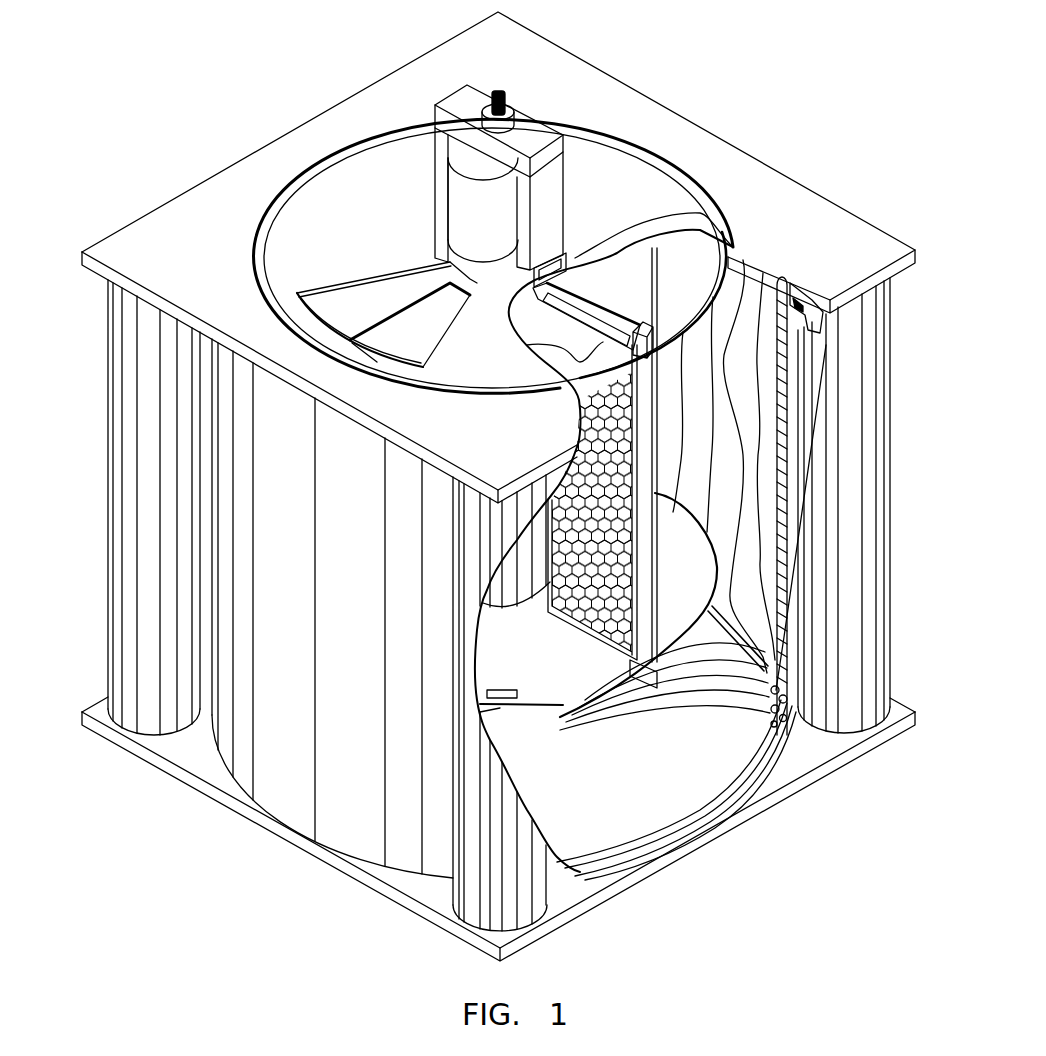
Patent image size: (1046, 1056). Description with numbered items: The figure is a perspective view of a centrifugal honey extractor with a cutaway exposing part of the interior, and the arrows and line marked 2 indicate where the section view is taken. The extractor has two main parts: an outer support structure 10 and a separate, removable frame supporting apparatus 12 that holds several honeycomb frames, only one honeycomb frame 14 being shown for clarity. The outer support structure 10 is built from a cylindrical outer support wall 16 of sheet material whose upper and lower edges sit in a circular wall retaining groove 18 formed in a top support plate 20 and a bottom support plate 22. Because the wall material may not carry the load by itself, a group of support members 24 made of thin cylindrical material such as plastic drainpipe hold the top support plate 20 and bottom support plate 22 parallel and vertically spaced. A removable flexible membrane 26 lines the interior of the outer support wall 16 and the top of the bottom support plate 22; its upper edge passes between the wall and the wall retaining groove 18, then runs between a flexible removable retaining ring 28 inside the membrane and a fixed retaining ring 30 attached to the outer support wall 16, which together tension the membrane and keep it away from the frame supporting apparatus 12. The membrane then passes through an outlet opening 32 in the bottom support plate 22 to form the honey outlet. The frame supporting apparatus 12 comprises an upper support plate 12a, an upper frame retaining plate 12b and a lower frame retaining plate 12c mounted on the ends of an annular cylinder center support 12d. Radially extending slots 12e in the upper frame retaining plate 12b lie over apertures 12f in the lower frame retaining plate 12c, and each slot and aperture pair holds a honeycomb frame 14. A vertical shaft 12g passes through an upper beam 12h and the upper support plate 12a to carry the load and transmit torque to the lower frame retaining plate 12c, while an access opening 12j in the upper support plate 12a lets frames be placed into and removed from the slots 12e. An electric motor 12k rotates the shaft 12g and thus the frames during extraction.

The section line 2- 2 is at (783, 88).
The outer support structure 10 is at (207, 190).
The frame supporting apparatus 12 is at (338, 256).
The upper support plate 12a is at (600, 227).
The upper frame retaining plate 12b is at (683, 318).
The lower frame retaining plate 12c is at (703, 592).
The annular cylinder center support 12d is at (550, 640).
The slots 12e is at (578, 378).
The apertures 12f is at (510, 688).
The shaft 12g is at (513, 98).
The upper beam 12h is at (540, 147).
The access opening 12j is at (318, 290).
The electric motor 12k is at (483, 213).
The honeycomb frame 14 is at (613, 433).
The outer support wall 16 is at (370, 575).
The wall retaining groove 18 is at (777, 745).
The top support plate 20 is at (513, 62).
The bottom support plate 22 is at (223, 800).
The support members 24 is at (108, 618).
The removable flexible membrane 26 is at (653, 727).
The removable retaining ring 28 is at (777, 750).
The fixed retaining ring 30 is at (733, 713).
The outlet opening 32 is at (525, 730).